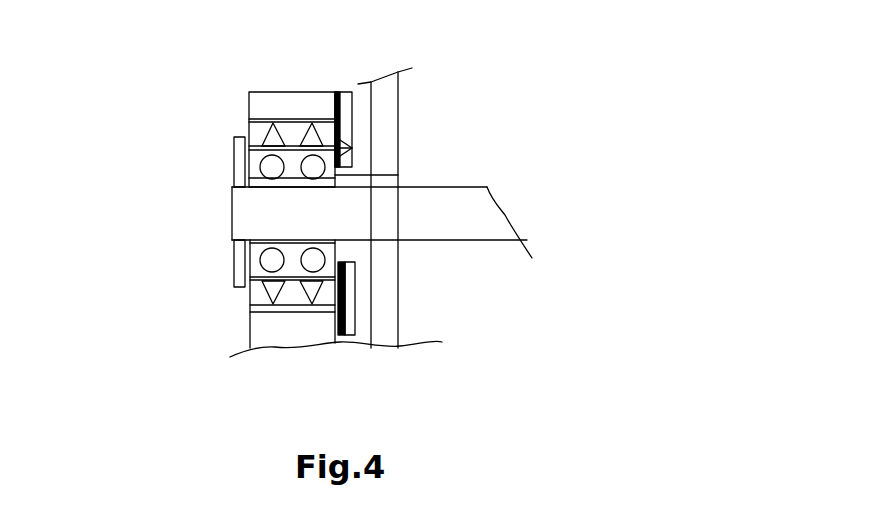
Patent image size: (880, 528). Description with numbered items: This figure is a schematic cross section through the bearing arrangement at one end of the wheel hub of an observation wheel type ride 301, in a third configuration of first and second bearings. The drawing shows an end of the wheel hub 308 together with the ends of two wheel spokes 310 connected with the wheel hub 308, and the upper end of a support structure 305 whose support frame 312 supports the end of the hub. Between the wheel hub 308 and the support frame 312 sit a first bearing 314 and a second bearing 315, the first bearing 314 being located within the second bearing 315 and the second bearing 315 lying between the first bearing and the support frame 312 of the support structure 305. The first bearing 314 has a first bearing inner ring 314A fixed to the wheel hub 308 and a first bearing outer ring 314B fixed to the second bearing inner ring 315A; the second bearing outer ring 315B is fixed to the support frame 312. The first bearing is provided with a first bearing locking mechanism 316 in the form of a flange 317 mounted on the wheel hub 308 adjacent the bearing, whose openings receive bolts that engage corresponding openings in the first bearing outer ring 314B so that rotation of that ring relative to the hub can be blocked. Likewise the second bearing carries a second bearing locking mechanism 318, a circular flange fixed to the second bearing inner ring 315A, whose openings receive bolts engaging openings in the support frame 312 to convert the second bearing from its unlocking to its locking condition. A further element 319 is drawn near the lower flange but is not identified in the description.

The observation wheel type ride 301 is at (580, 68).
The support structure 305 is at (200, 285).
The wheel hub 308 is at (237, 217).
The wheel spokes 310 is at (387, 93).
The support frame 312 is at (275, 330).
The first bearing 314 is at (335, 183).
The first bearing inner ring 314A is at (330, 187).
The first bearing outer ring 314B is at (340, 148).
The second bearing 315 is at (345, 130).
The second bearing inner ring 315A is at (482, 135).
The second bearing outer ring 315B is at (340, 110).
The first bearing locking mechanism 316 is at (218, 120).
The flange 317 is at (237, 168).
The second bearing locking mechanism 318 is at (363, 290).
The spacer 319 is at (347, 325).